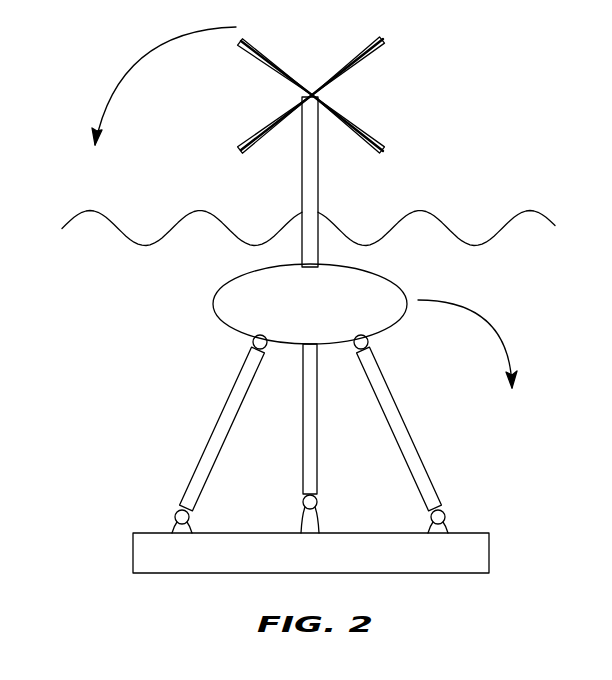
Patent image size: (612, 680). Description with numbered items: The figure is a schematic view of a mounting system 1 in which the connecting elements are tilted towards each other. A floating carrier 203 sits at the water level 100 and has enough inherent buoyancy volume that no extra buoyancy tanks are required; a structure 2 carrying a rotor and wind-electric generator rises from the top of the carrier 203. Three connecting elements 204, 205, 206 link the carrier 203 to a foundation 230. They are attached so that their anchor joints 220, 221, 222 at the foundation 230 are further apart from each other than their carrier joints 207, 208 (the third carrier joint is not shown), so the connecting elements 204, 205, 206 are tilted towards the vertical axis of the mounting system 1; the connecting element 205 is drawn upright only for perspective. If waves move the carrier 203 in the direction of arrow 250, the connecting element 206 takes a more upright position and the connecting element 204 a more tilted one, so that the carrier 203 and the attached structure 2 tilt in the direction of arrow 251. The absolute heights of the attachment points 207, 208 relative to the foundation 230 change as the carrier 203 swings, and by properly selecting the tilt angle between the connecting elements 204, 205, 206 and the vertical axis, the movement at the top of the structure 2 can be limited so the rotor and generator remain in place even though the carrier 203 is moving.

The mounting system 1 is at (407, 255).
The structure 2 is at (314, 202).
The water level 100 is at (135, 243).
The carrier 203 is at (397, 279).
The connecting element 204 is at (218, 430).
The connecting element 205 is at (308, 455).
The connecting element 206 is at (402, 430).
The carrier joint 207 is at (253, 343).
The carrier joint 208 is at (368, 342).
The anchor joint 220 is at (176, 511).
The anchor joint 221 is at (305, 497).
The anchor joint 222 is at (443, 512).
The foundation 230 is at (489, 565).
The arrow 250 is at (481, 344).
The arrow 251 is at (152, 86).